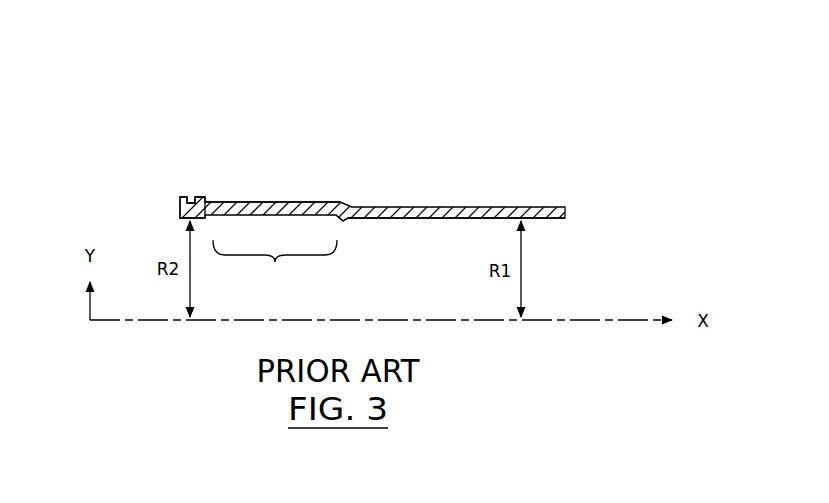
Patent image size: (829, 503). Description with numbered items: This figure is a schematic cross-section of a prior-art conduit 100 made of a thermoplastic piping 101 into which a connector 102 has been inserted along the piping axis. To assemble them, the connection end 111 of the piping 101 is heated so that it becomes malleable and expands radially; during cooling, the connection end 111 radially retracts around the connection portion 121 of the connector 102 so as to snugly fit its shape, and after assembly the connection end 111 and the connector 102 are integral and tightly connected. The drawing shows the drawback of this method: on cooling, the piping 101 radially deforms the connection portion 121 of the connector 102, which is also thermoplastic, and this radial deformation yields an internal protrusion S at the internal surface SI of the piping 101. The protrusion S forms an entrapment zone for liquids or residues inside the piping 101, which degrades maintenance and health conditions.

The conduit 100 is at (378, 168).
The piping 101 is at (432, 188).
The connector 102 is at (197, 190).
The connection end 111 is at (259, 197).
The connection portion 121 is at (275, 270).
The internal protrusion S is at (348, 229).
The internal surface SI is at (410, 220).